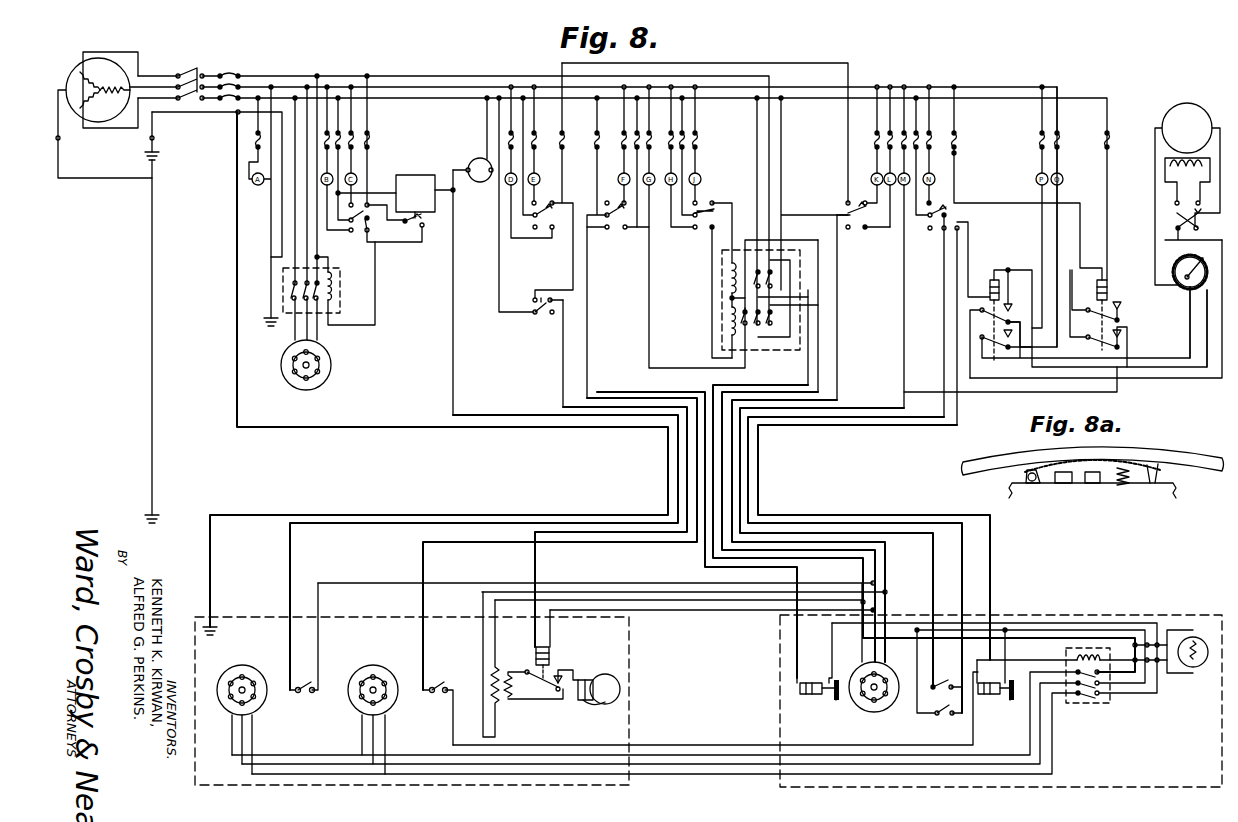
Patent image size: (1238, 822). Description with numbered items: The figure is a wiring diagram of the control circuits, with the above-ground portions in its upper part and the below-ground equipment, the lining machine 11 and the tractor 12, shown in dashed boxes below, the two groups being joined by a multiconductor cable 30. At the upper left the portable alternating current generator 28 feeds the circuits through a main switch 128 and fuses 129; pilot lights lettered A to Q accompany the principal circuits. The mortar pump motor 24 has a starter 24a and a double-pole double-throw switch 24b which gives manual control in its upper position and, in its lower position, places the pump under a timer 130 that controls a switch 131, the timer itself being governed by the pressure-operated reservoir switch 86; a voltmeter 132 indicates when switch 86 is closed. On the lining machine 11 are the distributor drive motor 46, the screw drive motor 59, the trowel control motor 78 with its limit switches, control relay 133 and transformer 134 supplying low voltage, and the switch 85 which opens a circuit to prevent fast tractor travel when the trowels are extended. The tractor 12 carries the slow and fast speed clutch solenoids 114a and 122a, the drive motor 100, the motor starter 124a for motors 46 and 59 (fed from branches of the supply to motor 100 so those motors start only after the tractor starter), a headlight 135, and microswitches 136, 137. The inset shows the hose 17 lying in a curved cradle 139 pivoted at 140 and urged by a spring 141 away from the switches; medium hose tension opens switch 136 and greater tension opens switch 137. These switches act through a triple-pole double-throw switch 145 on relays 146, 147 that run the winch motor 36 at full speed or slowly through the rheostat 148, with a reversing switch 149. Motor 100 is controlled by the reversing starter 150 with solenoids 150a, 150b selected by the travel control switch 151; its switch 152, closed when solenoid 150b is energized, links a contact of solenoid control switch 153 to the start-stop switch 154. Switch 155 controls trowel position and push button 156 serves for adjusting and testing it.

In FIG. 8, the portable alternating current generator 28 is at (78, 68).
In FIG. 8, the main switch 128 is at (180, 70).
In FIG. 8, the fuses 129 is at (226, 70).
In FIG. 8, the voltmeter 132 is at (474, 160).
In FIG. 8, the timer 130 is at (428, 202).
In FIG. 8, the switch 131 is at (407, 229).
In FIG. 8, the double-pole double-throw switch 24b is at (364, 228).
In FIG. 8, the starter 24a is at (331, 302).
In FIG. 8, the mortar pump motor 24 is at (331, 356).
In FIG. 8, the double-pole double-throw switch 155 is at (540, 237).
In FIG. 8, the double-pole double-throw solenoid control switch 153 is at (622, 237).
In FIG. 8, the push button 156 is at (542, 317).
In FIG. 8, the double-pole travel control switch 151 is at (706, 232).
In FIG. 8, the reversing motor starter 150 is at (789, 353).
In FIG. 8, the solenoid 150a is at (726, 279).
In FIG. 8, the solenoid 150b is at (726, 318).
In FIG. 8, the switch 152 is at (752, 336).
In FIG. 8, the double-pole double-throw switch 154 is at (865, 233).
In FIG. 8, the triple-pole double-throw switch 145 is at (925, 233).
In FIG. 8, the relay 147 is at (992, 280).
In FIG. 8, the relay 146 is at (1109, 287).
In FIG. 8, the potentiometer type rheostat 148 is at (1186, 282).
In FIG. 8, the reversing switch 149 is at (1168, 227).
In FIG. 8, the winch motor 36 is at (1184, 115).
In FIG. 8, the multiconductor cable 30 is at (736, 479).
In FIG. 8, the lining machine 11 is at (391, 614).
In FIG. 8, the tractor 12 is at (1051, 609).
In FIG. 8, the distributor drive motor 46 is at (248, 661).
In FIG. 8, the screw drive motor 59 is at (378, 659).
In FIG. 8, the switch 86 is at (306, 700).
In FIG. 8, the switch 85 is at (432, 693).
In FIG. 8, the transformer 134 is at (508, 700).
In FIG. 8, the control relay 133 is at (552, 662).
In FIG. 8, the trowel control motor 78 is at (612, 687).
In FIG. 8, the slow speed clutch control solenoid 114a is at (816, 697).
In FIG. 8, the tractor drive motor 100 is at (860, 706).
In FIG. 8, the microswitch 136 is at (939, 682).
In FIG. 8A, the microswitch 136 is at (1063, 484).
In FIG. 8, the microswitch 137 is at (949, 715).
In FIG. 8A, the microswitch 137 is at (1095, 484).
In FIG. 8, the fast speed clutch control solenoid 122a is at (993, 697).
In FIG. 8, the motor starter 124a is at (1098, 702).
In FIG. 8, the headlight 135 is at (1205, 668).
In FIG. 8A, the hose 17 is at (1200, 458).
In FIG. 8A, the pivot 140 is at (1030, 484).
In FIG. 8A, the spring 141 is at (1124, 484).
In FIG. 8A, the curved guide or cradle 139 is at (1153, 484).